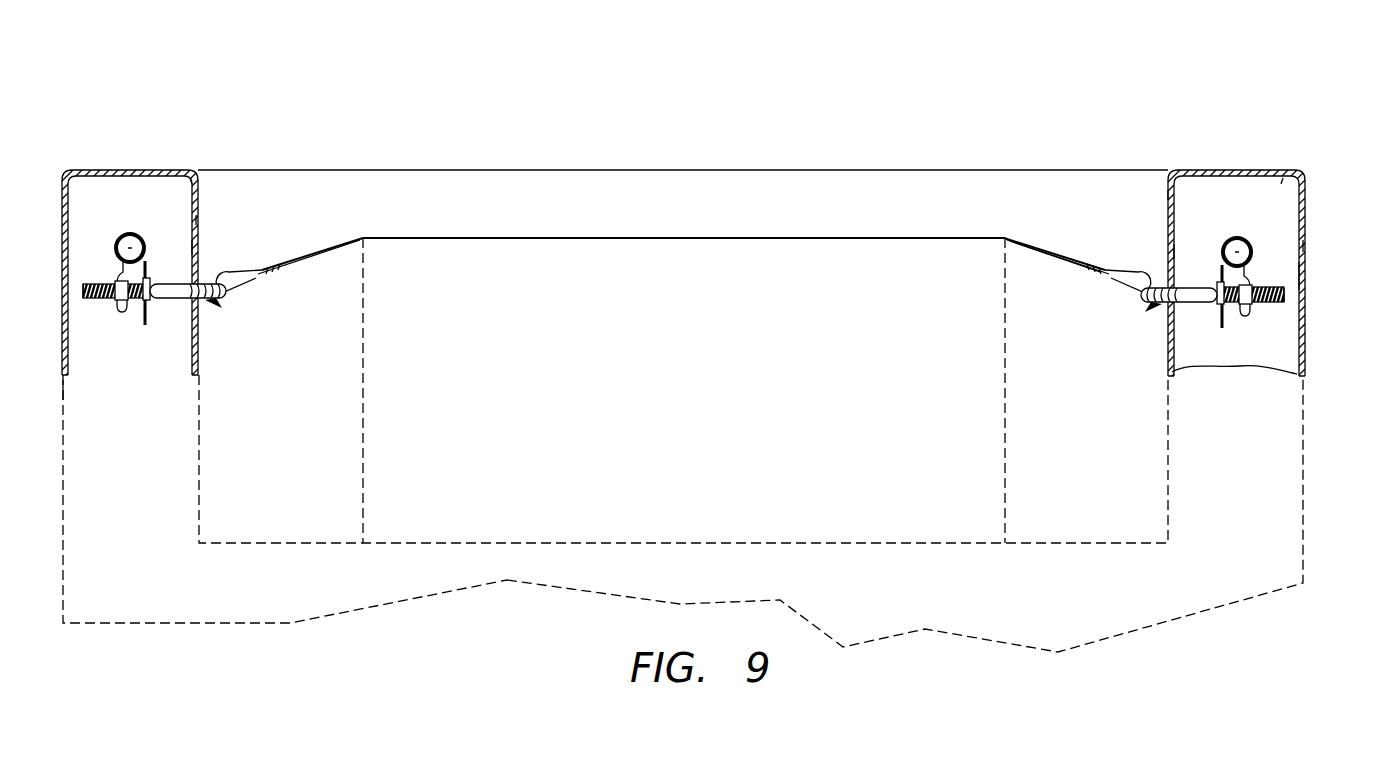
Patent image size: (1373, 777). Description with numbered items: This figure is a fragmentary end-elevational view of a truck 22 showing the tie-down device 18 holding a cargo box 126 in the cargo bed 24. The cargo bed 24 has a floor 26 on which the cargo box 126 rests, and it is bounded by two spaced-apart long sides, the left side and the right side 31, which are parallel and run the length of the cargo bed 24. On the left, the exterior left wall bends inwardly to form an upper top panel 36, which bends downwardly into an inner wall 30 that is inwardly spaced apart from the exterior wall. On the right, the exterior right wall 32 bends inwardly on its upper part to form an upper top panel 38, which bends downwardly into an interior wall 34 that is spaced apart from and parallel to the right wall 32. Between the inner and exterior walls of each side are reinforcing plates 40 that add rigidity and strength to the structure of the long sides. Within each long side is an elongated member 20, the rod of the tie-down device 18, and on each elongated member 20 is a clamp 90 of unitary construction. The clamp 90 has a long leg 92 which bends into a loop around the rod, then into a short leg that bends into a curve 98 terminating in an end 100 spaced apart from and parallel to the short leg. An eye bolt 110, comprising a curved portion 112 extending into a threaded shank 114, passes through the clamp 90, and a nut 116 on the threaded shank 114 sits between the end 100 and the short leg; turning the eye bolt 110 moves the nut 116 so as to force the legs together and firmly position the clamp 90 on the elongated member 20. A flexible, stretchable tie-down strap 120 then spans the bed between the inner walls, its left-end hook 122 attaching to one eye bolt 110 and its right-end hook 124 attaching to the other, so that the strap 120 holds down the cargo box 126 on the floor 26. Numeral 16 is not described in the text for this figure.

The vehicle frame 16 is at (100, 302).
The tie-down device 18 is at (153, 241).
The elongated member 20 is at (127, 249).
The truck 22 is at (258, 623).
The cargo bed 24 is at (905, 514).
The floor 26 is at (542, 543).
The inner wall 30 is at (198, 215).
The right side 31 is at (1298, 248).
The exterior right wall 32 is at (1312, 245).
The interior wall 34 is at (1168, 194).
The upper top panel 36 is at (98, 170).
The upper top panel 38 is at (1238, 172).
The reinforcing plates 40 is at (194, 176).
The clamp 90 is at (147, 331).
The long leg 92 is at (198, 246).
The curve 98 is at (118, 314).
The end 100 is at (1258, 308).
The eye bolt 110 is at (67, 370).
The curved portion 112 is at (215, 275).
The threaded shank 114 is at (1277, 305).
The nut 116 is at (1283, 297).
The flexible tie-down strap 120 is at (627, 237).
The hook 122 is at (248, 290).
The hook 124 is at (1135, 291).
The cargo box 126 is at (684, 390).